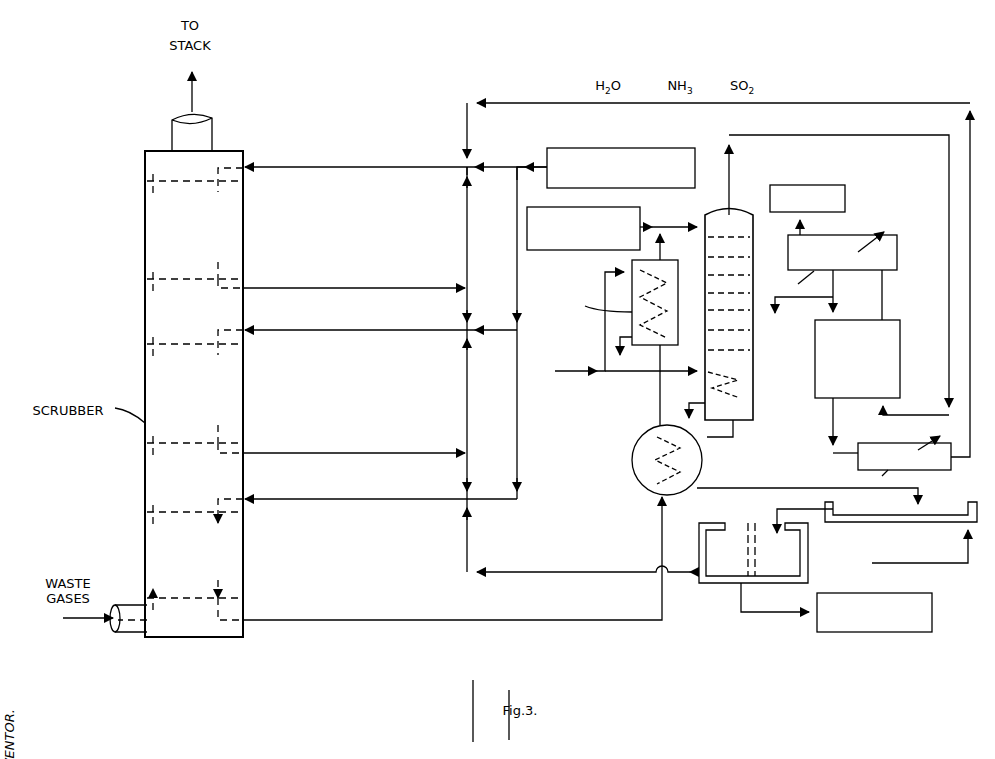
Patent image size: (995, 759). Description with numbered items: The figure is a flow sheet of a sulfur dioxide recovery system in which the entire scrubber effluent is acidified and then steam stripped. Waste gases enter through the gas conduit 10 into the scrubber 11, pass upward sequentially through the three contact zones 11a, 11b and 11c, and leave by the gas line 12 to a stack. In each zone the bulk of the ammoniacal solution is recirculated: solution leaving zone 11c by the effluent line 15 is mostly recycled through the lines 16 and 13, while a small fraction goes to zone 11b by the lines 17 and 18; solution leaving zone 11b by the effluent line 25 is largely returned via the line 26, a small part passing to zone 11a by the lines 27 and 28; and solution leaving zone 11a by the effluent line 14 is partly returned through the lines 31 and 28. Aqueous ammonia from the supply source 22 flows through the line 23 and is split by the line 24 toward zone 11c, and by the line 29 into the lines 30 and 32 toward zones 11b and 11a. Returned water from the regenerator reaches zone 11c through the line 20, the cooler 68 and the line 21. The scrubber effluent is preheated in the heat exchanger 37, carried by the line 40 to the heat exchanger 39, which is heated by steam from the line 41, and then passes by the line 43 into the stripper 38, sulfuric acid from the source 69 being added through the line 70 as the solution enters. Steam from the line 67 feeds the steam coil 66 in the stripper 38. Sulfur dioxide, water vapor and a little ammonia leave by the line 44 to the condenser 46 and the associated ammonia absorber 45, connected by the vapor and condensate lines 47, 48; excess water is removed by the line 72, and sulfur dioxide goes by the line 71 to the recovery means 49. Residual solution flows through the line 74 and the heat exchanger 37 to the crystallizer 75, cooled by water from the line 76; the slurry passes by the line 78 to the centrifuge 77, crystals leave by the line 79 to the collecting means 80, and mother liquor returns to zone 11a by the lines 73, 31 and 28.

The gas conduit 10 is at (132, 634).
The scrubber 11 is at (145, 428).
The scrubber zone 11a is at (145, 552).
The scrubber zone 11b is at (243, 380).
The scrubber zone 11c is at (145, 228).
The gas line 12 is at (205, 132).
The line 13 is at (322, 168).
The effluent line 14 is at (330, 619).
The effluent line 15 is at (350, 286).
The line 16 is at (467, 250).
The line 17 is at (467, 300).
The line 18 is at (385, 331).
The line 20 is at (545, 100).
The line 21 is at (467, 132).
The ammonia supply source 22 is at (660, 148).
The line 23 is at (530, 158).
The line 24 is at (500, 206).
The effluent line 25 is at (338, 452).
The line 26 is at (467, 405).
The line 27 is at (467, 468).
The line 28 is at (302, 500).
The line 29 is at (517, 240).
The line 30 is at (505, 312).
The line 31 is at (467, 545).
The line 32 is at (517, 400).
The heat exchanger 37 is at (640, 486).
The stripper 38 is at (755, 346).
The heat exchanger 39 is at (632, 302).
The line 40 is at (650, 405).
The line 41 is at (575, 370).
The line 43 is at (690, 225).
The line 44 is at (842, 135).
The ammonia absorber 45 is at (900, 372).
The condenser 46 is at (897, 257).
The vapor line 47 is at (882, 292).
The condensate line 48 is at (833, 290).
The sulfur dioxide recovery means 49 is at (822, 165).
The steam coil 66 is at (737, 425).
The line 67 is at (622, 373).
The cooler 68 is at (872, 443).
The sulfuric acid supply source 69 is at (590, 207).
The line 70 is at (660, 224).
The line 71 is at (798, 227).
The line 72 is at (793, 297).
The line 73 is at (562, 570).
The line 74 is at (768, 488).
The crystallizer 75 is at (965, 505).
The line 76 is at (958, 566).
The centrifuge 77 is at (808, 557).
The line 78 is at (775, 512).
The line 79 is at (772, 614).
The ammonium sulfate collecting means 80 is at (873, 632).